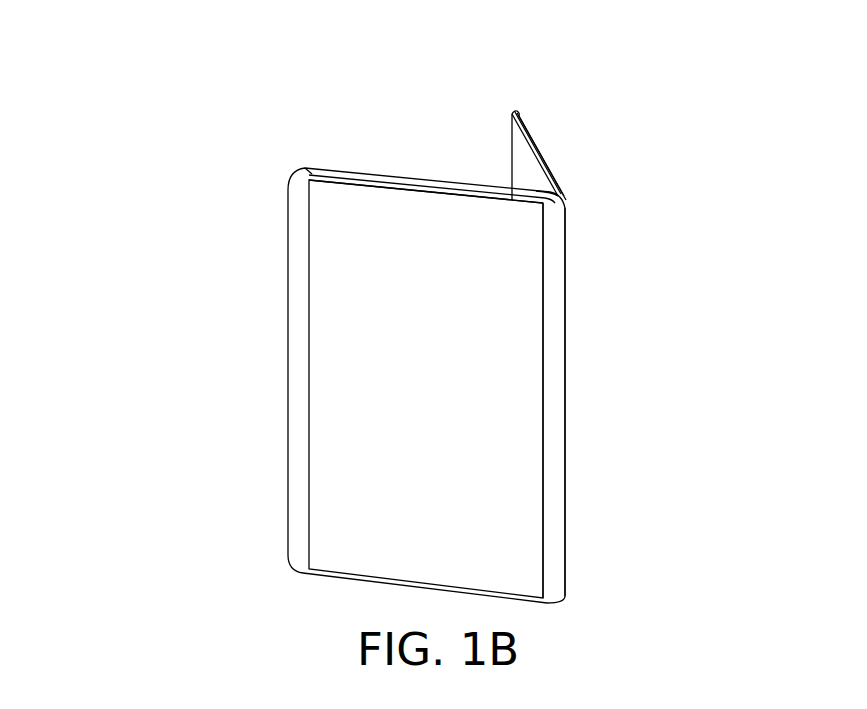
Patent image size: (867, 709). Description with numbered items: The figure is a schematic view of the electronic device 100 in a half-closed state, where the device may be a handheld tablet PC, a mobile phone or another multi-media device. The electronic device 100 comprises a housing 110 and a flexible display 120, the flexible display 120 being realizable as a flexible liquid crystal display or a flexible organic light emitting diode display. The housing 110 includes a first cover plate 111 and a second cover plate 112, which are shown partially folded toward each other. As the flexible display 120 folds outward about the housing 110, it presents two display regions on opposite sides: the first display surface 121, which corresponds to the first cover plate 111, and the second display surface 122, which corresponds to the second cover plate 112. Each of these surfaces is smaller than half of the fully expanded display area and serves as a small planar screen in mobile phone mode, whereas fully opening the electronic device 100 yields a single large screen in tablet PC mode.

The electronic device 100 is at (58, 68).
The housing 110 is at (507, 92).
The first cover plate 111 is at (535, 162).
The second cover plate 112 is at (432, 183).
The flexible display 120 is at (662, 378).
The first display surface 121 is at (504, 436).
The second display surface 122 is at (568, 398).